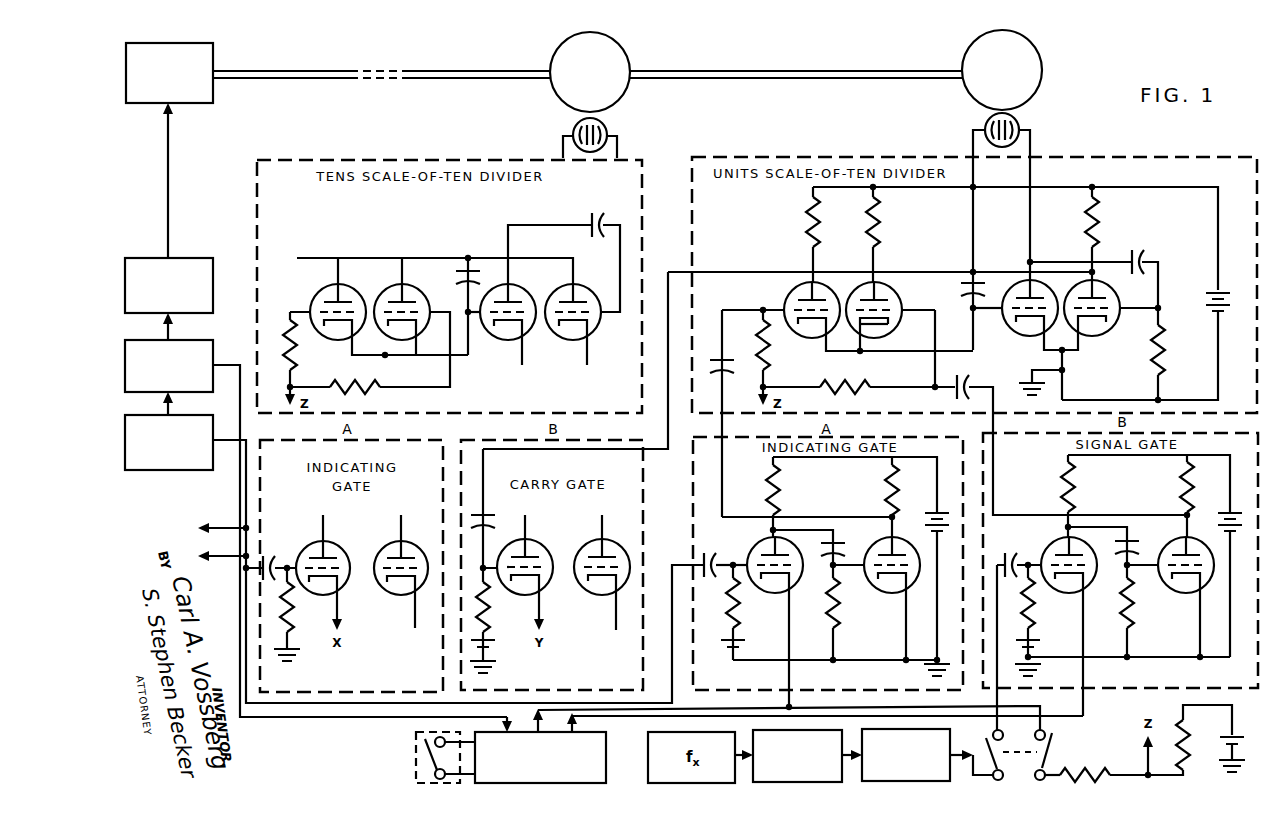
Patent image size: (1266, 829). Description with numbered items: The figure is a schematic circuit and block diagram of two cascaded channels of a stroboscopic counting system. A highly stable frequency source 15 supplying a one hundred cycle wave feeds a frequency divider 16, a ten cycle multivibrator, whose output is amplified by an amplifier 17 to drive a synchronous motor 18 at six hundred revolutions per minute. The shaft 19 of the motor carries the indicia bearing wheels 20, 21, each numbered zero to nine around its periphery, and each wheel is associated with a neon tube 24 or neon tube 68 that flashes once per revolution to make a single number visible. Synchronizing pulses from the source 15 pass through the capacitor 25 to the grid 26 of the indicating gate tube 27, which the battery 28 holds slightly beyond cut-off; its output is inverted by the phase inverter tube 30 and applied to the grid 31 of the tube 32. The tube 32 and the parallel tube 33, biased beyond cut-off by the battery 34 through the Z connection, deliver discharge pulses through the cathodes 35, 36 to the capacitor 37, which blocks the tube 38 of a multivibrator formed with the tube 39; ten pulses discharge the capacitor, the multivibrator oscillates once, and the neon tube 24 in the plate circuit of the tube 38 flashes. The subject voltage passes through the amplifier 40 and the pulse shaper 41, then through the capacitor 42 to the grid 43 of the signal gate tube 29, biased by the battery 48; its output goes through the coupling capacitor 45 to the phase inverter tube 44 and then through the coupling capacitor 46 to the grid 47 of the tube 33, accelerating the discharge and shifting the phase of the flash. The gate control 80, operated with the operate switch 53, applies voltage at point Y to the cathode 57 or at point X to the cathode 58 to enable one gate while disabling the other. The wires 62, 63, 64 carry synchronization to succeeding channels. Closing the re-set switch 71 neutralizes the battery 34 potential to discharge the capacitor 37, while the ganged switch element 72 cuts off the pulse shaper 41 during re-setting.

The frequency source 15 is at (125, 445).
The frequency divider 16 is at (125, 368).
The amplifier 17 is at (125, 288).
The synchronous motor 18 is at (213, 93).
The shaft 19 is at (263, 71).
The indicia bearing wheel 20 is at (1038, 88).
The indicia bearing wheel 21 is at (626, 88).
The neon tube 24 is at (1019, 125).
The capacitor 25 is at (716, 557).
The grid 26 is at (760, 572).
The indicating gate tube 27 is at (795, 585).
The battery 28 is at (745, 644).
The signal gate tube 29 is at (1067, 588).
The phase inverter tube 30 is at (893, 593).
The grid 31 is at (800, 300).
The tube 32 is at (802, 340).
The tube 33 is at (900, 300).
The battery 34 is at (1234, 738).
The cathode 35 is at (828, 337).
The cathode 36 is at (867, 325).
The capacitor 37 is at (980, 275).
The tube 38 is at (1020, 335).
The tube 39 is at (1100, 335).
The amplifier 40 is at (795, 782).
The pulse shaper 41 is at (900, 781).
The capacitor 42 is at (1012, 552).
The grid 43 is at (1082, 567).
The phase inverter tube 44 is at (1185, 593).
The coupling capacitor 45 is at (1140, 552).
The coupling capacitor 46 is at (960, 395).
The grid 47 is at (887, 312).
The battery 48 is at (1040, 647).
The operate switch 53 is at (452, 784).
The cathode 57 is at (1085, 578).
The cathode 58 is at (797, 583).
The wire 62 is at (242, 572).
The wire 63 is at (222, 526).
The wire 64 is at (232, 558).
The neon tube 68 is at (607, 130).
The re-set switch 71 is at (1048, 758).
The switch element 72 is at (992, 750).
The gate control 80 is at (545, 785).